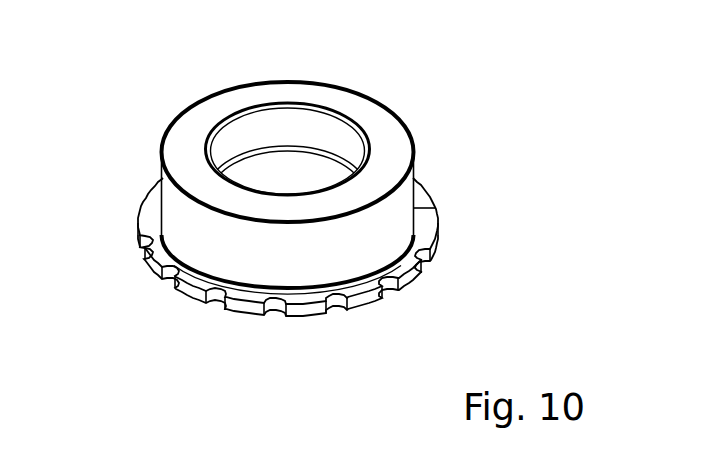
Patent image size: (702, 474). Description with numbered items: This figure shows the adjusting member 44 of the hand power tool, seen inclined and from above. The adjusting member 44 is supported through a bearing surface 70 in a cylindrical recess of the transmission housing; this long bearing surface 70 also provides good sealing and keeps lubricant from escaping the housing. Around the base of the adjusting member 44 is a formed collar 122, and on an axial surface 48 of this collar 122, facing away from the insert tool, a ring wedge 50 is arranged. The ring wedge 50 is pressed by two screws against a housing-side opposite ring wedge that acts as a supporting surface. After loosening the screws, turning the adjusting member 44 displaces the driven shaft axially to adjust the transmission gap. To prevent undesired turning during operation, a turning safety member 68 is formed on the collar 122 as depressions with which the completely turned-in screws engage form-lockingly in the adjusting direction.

The adjusting member 44 is at (373, 89).
The axial surface 48 is at (422, 197).
The ring wedge 50 is at (418, 248).
The turning safety member 68 is at (158, 272).
The bearing surface 70 is at (262, 268).
The collar 122 is at (302, 316).